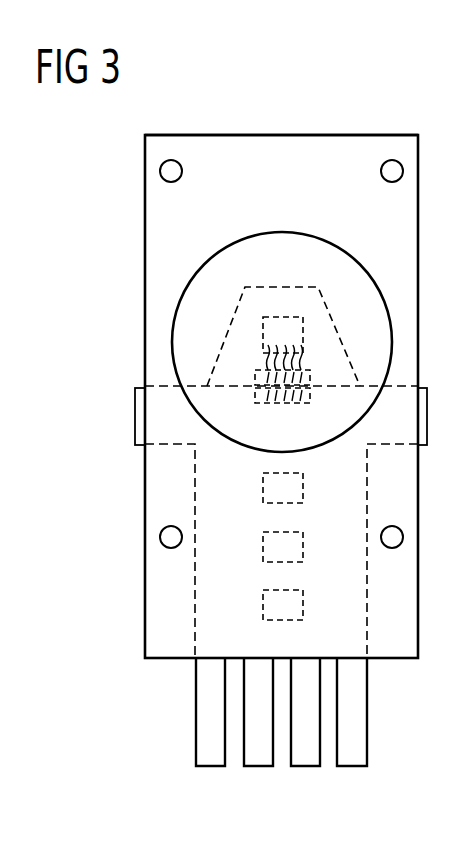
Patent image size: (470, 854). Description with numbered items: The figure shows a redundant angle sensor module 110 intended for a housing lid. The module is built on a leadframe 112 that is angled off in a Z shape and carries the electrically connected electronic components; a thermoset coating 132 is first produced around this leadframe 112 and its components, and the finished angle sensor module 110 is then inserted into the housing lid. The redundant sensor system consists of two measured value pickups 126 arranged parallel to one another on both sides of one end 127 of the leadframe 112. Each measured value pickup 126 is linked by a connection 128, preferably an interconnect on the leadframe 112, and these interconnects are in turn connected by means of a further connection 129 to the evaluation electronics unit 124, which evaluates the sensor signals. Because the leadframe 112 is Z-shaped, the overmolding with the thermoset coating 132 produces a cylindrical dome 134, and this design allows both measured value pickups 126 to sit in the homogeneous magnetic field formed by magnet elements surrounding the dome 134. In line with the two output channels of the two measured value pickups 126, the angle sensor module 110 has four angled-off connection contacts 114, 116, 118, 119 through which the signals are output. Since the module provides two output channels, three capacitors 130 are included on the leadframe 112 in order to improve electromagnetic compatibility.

The angle sensor module 110 is at (126, 173).
The leadframe 112 is at (195, 633).
The connection contact 114 is at (207, 757).
The connection contact 116 is at (255, 757).
The connection contact 118 is at (302, 757).
The connection contact 119 is at (350, 757).
The evaluation electronics unit 124 is at (258, 403).
The measured value pickup 126 is at (293, 318).
The end of leadframe 127 is at (242, 290).
The connection 128 is at (302, 352).
The connection 129 is at (255, 370).
The capacitor 130 is at (293, 493).
The thermoset coating 132 is at (347, 145).
The cylindrical dome 134 is at (172, 325).